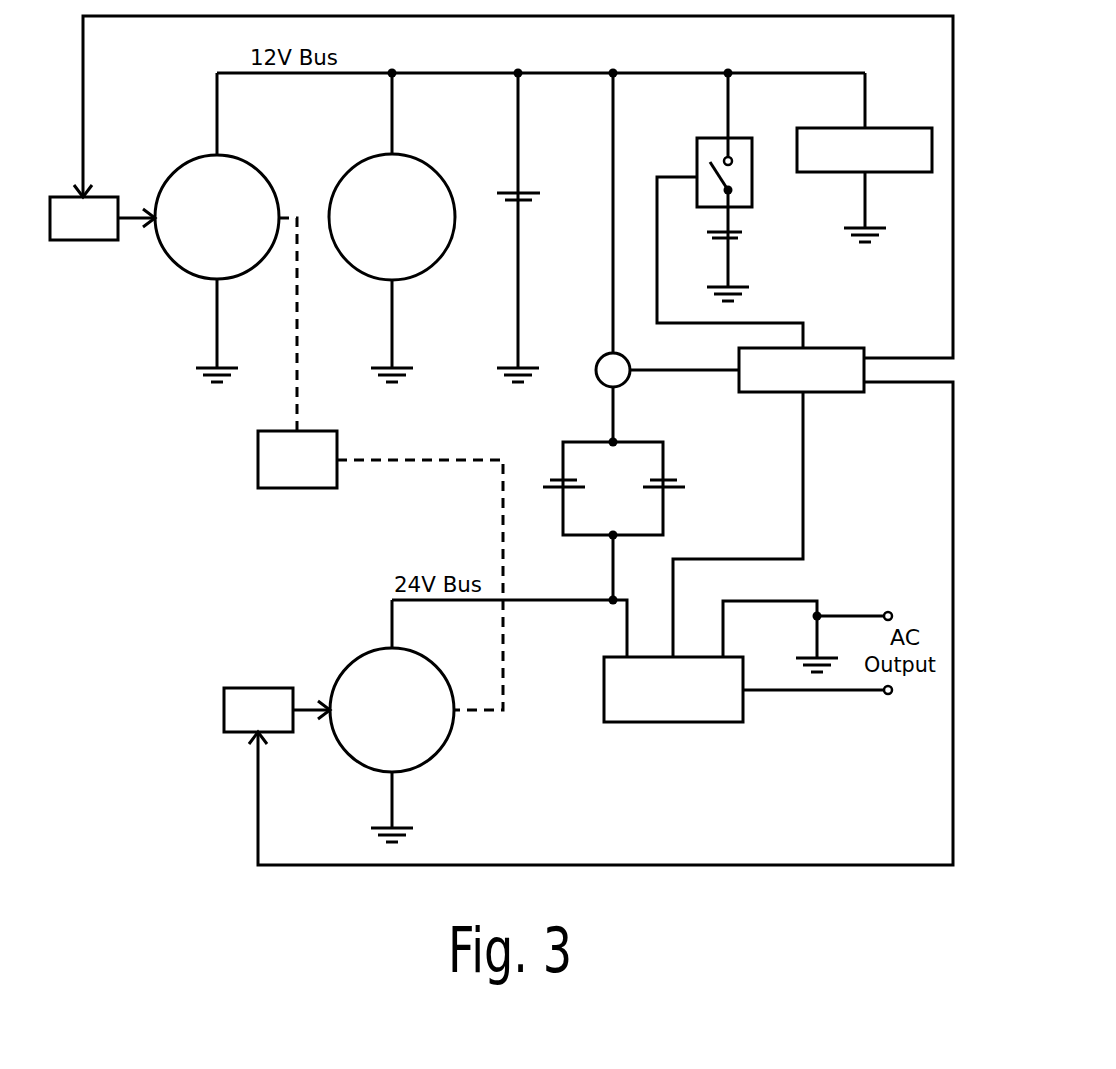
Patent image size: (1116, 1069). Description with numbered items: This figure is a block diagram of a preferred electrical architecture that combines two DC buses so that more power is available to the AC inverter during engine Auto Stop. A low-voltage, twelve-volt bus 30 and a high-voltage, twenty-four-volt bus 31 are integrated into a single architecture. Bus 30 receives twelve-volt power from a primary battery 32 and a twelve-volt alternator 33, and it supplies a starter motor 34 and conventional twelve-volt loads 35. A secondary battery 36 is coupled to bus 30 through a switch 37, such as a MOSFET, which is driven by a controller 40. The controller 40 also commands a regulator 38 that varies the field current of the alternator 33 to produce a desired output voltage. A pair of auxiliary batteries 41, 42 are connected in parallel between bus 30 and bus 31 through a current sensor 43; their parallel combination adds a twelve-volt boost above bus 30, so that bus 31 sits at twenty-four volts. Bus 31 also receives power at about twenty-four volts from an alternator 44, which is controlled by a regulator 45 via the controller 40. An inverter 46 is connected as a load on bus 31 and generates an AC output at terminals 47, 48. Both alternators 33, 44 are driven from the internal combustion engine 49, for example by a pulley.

The low-voltage bus 30 is at (553, 72).
The high-voltage bus 31 is at (558, 603).
The primary battery 32 is at (505, 193).
The 12V alternator 33 is at (178, 163).
The starter motor 34 is at (355, 165).
The 12-volt loads 35 is at (823, 128).
The secondary battery 36 is at (742, 230).
The switch 37 is at (705, 138).
The regulator 38 is at (65, 242).
The controller 40 is at (840, 348).
The auxiliary battery 41 is at (675, 490).
The auxiliary battery 42 is at (553, 490).
The current sensor 43 is at (597, 362).
The alternator 44 is at (445, 745).
The regulator 45 is at (272, 688).
The inverter 46 is at (715, 722).
The terminal 47 is at (890, 696).
The terminal 48 is at (886, 612).
The internal combustion engine 49 is at (258, 440).